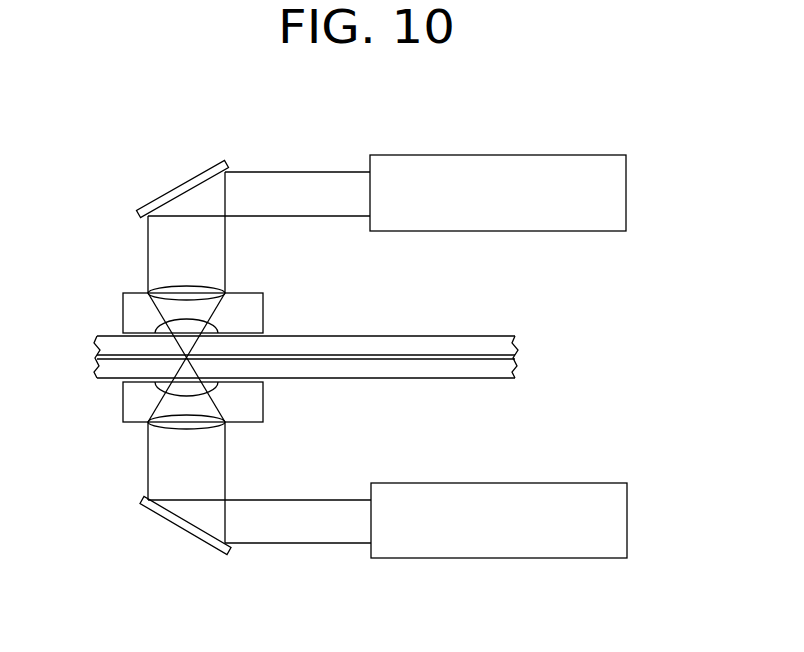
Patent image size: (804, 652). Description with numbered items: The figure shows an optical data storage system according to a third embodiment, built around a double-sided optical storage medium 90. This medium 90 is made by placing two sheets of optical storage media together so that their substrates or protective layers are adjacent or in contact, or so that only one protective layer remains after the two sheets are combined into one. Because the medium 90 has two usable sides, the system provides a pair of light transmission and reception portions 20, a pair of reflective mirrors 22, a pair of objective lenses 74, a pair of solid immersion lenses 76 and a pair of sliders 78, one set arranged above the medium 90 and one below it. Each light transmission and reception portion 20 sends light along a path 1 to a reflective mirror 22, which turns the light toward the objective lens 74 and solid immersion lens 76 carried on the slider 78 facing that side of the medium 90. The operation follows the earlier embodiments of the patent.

The optical signal beam path 1 is at (307, 172).
The light transmission and reception portion 20 is at (434, 155).
The reflective mirror 22 is at (183, 186).
The objective lens 74 is at (150, 285).
The solid immersion lens 76 is at (215, 323).
The slider 78 is at (123, 308).
The double-sided optical storage medium 90 is at (521, 336).